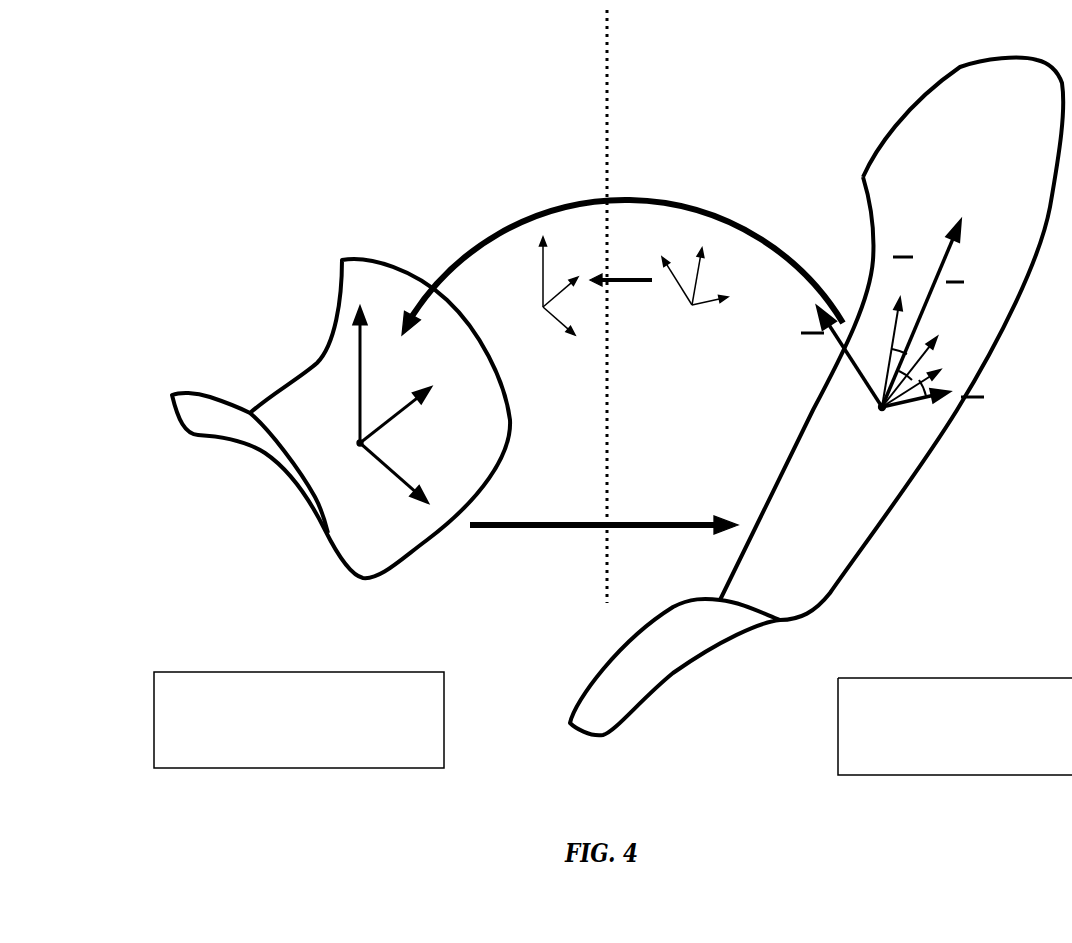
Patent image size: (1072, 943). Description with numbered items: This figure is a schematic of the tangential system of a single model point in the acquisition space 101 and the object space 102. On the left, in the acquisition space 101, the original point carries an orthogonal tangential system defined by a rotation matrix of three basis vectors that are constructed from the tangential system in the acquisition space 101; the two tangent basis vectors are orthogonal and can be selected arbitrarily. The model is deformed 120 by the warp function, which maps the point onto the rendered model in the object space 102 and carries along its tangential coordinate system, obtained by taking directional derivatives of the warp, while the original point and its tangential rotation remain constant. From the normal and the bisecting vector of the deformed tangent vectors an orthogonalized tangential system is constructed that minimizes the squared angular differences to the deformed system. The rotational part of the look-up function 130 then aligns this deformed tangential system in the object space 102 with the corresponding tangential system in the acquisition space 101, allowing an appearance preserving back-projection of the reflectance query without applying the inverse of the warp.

The acquisition space 101 is at (278, 709).
The object space 102 is at (965, 716).
The deforming 120 is at (635, 530).
The look-up function 130 is at (717, 217).